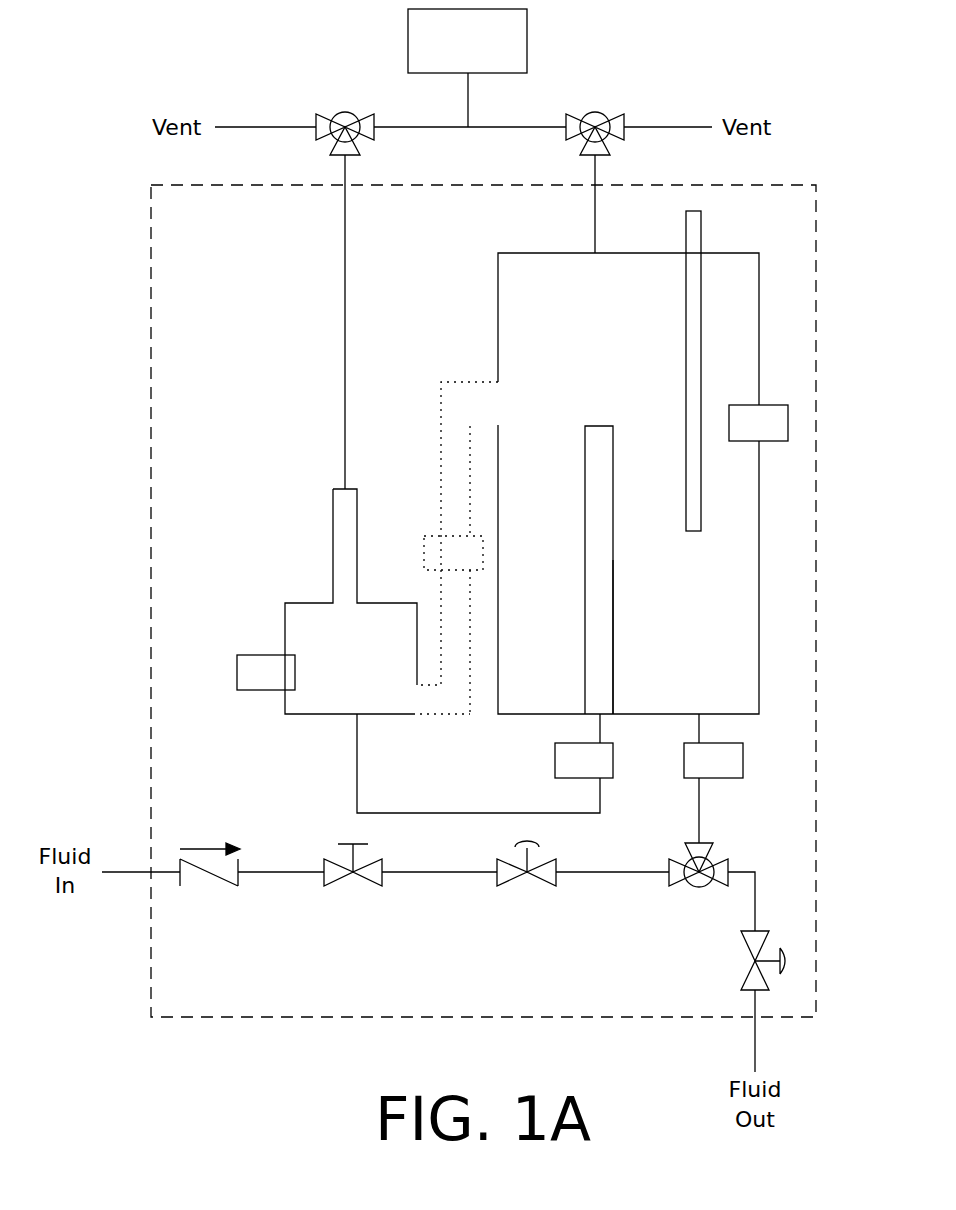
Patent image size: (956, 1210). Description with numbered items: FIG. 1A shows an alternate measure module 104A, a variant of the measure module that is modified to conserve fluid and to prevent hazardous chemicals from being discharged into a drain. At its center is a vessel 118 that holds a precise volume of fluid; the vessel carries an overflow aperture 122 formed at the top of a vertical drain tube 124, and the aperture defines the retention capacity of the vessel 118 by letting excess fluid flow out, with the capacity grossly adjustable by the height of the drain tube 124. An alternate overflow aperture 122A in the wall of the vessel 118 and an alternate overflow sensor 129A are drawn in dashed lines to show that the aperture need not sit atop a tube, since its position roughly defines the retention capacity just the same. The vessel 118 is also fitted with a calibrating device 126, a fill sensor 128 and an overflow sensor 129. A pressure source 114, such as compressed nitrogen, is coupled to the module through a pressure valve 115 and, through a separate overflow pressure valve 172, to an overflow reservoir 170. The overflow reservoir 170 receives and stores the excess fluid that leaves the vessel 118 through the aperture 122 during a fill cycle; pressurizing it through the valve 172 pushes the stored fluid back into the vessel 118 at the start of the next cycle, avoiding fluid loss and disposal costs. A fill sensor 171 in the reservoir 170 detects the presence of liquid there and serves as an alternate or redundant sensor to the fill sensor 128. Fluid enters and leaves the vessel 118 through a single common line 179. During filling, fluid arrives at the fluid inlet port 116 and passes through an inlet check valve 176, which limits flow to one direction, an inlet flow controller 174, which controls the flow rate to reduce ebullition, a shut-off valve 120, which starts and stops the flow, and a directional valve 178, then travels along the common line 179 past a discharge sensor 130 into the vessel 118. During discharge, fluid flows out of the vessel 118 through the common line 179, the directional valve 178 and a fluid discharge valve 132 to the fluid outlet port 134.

The alternate measure module 104A is at (272, 1019).
The pressure source 114 is at (527, 20).
The pressure valve 115 is at (624, 133).
The fluid inlet port 116 is at (148, 873).
The vessel 118 is at (498, 288).
The shut-off valve 120 is at (540, 887).
The overflow aperture 122 is at (600, 422).
The alternate overflow aperture 122A is at (493, 398).
The vertical drain tube 124 is at (613, 602).
The calibrating device 126 is at (705, 232).
The fill sensor 128 is at (770, 442).
The overflow sensor 129 is at (555, 757).
The alternate overflow sensor 129A is at (437, 536).
The discharge sensor 130 is at (728, 778).
The fluid discharge valve 132 is at (740, 940).
The fluid outlet port 134 is at (757, 1030).
The overflow reservoir 170 is at (300, 603).
The fill sensor 171 is at (265, 690).
The overflow pressure valve 172 is at (374, 133).
The inlet flow controller 174 is at (375, 887).
The inlet check valve 176 is at (230, 887).
The directional valve 178 is at (672, 887).
The common line 179 is at (697, 805).